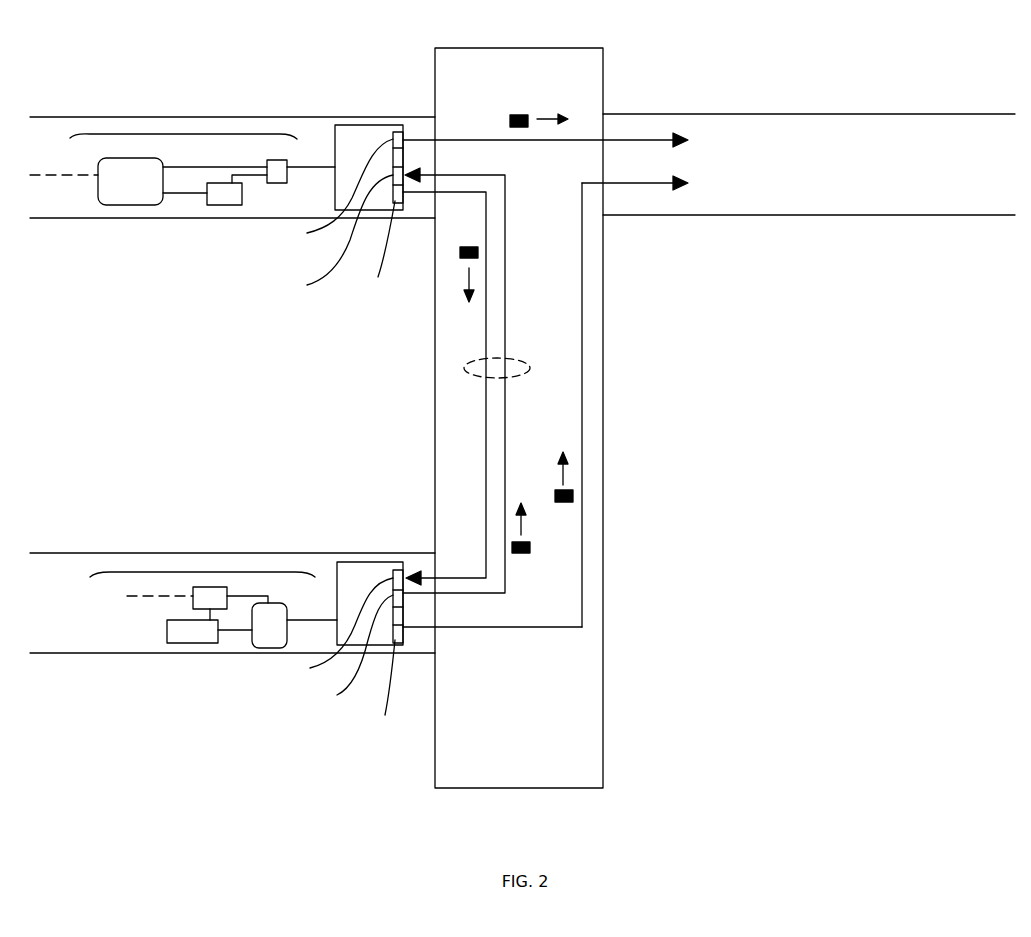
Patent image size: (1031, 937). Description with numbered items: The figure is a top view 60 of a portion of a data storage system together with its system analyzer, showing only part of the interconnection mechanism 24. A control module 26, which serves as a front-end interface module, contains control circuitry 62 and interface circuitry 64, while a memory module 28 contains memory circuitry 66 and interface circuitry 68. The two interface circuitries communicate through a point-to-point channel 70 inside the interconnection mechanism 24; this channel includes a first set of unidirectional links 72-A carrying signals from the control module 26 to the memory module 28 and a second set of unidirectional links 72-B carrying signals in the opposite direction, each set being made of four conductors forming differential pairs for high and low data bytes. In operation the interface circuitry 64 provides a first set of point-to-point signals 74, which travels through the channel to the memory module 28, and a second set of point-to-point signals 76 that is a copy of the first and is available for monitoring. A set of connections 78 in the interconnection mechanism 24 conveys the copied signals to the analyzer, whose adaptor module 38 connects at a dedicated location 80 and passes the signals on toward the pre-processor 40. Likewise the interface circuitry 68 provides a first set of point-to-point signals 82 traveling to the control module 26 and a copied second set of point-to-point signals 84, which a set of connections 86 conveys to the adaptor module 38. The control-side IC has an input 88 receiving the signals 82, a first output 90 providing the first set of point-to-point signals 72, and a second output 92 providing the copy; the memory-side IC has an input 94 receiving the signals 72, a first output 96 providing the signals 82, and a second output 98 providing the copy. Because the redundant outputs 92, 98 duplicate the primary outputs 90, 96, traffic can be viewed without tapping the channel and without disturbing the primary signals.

The interconnection mechanism 24 is at (519, 418).
The control module 26 is at (148, 220).
The memory module 28 is at (150, 655).
The adaptor module 38 is at (757, 218).
The pre-processor 40 is at (796, 159).
The top view 60 is at (730, 66).
The control circuitry 62 is at (183, 135).
The interface circuitry 64 is at (380, 125).
The memory circuitry 66 is at (200, 572).
The interface circuitry 68 is at (380, 558).
The point-to-point channel 70 is at (464, 368).
The first set of point-to-point signals 72 is at (425, 380).
The first set of unidirectional links 72-A is at (482, 326).
The second set of unidirectional links 72-B is at (505, 327).
The first set of point-to-point signals 74 is at (468, 247).
The second set of point-to-point signals 76 is at (510, 118).
The set of connections 78 is at (528, 143).
The dedicated location 80 is at (630, 240).
The first set of point-to-point signals 82 is at (522, 556).
The second set of point-to-point signals 84 is at (565, 505).
The set of connections 86 is at (581, 390).
The input 88 is at (335, 236).
The first output 90 is at (373, 245).
The second output 92 is at (335, 193).
The input 94 is at (335, 630).
The first output 96 is at (347, 652).
The second output 98 is at (374, 683).